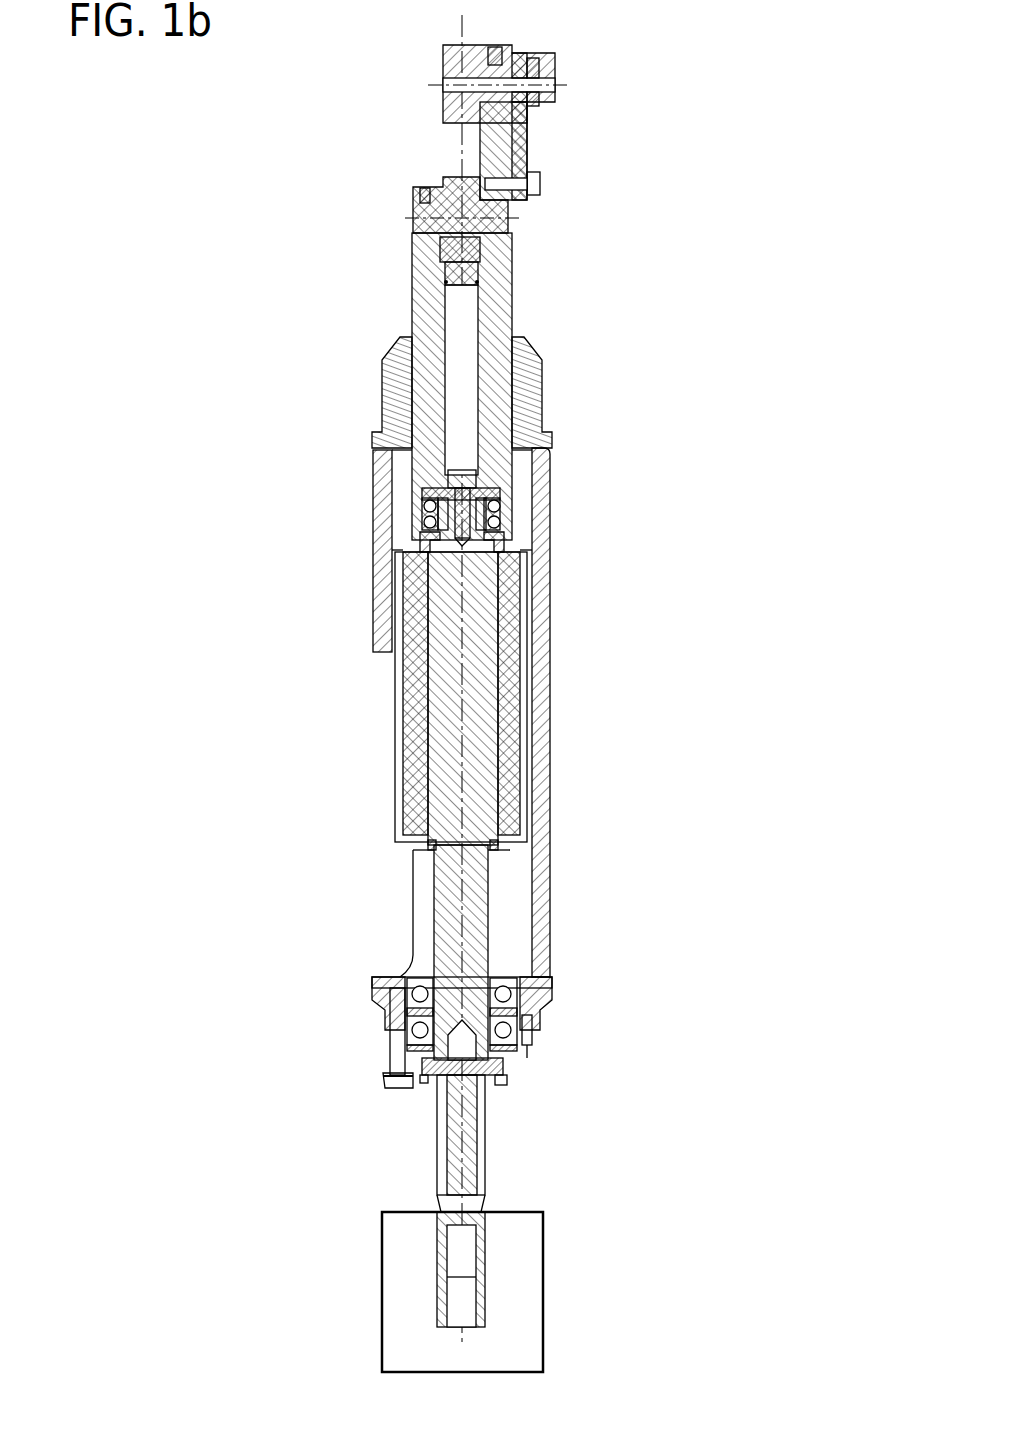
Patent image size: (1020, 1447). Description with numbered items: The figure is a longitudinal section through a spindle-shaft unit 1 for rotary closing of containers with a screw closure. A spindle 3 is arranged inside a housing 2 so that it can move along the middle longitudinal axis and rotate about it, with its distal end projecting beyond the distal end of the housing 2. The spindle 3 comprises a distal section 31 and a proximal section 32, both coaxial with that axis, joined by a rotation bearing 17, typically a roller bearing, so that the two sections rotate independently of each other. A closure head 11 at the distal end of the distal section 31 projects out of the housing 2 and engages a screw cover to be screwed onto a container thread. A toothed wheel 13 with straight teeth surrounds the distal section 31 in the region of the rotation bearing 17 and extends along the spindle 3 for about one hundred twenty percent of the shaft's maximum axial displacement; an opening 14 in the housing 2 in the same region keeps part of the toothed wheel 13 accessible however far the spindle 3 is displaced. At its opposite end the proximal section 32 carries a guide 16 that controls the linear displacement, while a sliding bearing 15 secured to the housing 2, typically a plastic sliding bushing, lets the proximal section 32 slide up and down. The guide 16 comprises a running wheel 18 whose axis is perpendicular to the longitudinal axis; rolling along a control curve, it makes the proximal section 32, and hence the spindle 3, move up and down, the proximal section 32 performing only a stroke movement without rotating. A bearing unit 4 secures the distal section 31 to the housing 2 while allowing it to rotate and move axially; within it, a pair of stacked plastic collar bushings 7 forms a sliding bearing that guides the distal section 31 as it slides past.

The spindle-shaft unit 1 is at (734, 510).
The housing 2 is at (540, 688).
The spindle 3 is at (420, 866).
The bearing unit 4 is at (470, 1031).
The plastic collar bushings 7 is at (498, 993).
The closure head 11 is at (523, 1305).
The toothed wheel 13 is at (515, 630).
The opening 14 is at (466, 698).
The sliding bearing 15 is at (405, 335).
The guide 16 is at (553, 128).
The rotation bearing 17 is at (419, 517).
The running wheel 18 is at (450, 58).
The distal section 31 is at (480, 903).
The proximal section 32 is at (496, 297).